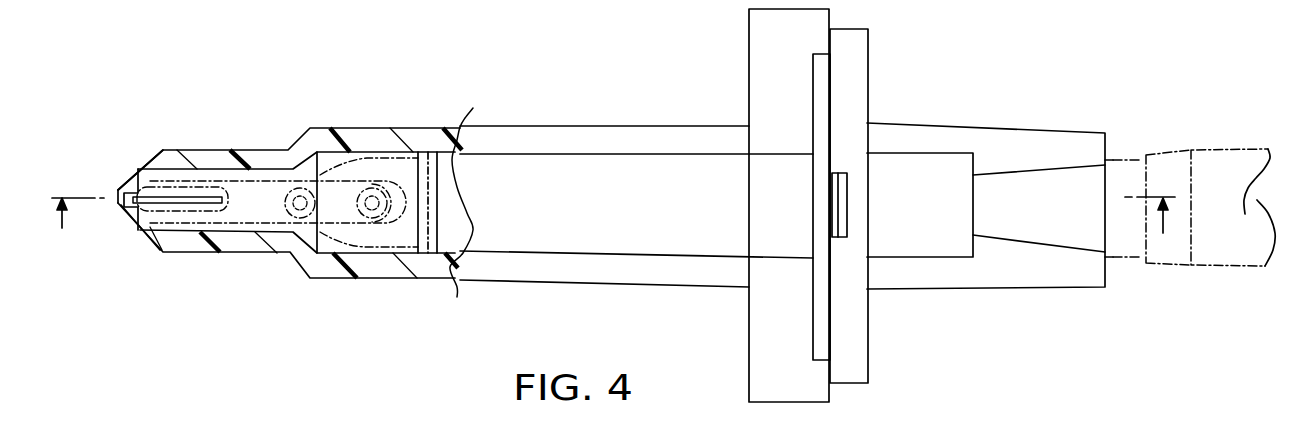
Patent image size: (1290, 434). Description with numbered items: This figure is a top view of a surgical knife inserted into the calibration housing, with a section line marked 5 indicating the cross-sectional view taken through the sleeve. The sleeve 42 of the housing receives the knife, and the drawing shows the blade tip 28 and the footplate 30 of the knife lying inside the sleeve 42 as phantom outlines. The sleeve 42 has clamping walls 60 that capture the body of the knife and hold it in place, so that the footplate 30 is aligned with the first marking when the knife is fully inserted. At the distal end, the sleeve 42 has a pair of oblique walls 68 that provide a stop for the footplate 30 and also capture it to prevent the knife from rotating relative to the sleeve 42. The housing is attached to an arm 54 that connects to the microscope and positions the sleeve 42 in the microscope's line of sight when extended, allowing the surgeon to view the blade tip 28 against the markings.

The blade tip 28 is at (163, 197).
The footplate 30 is at (138, 229).
The sleeve 42 is at (608, 287).
The arm 54 is at (749, 65).
The clamping walls 60 is at (306, 203).
The oblique walls 68 is at (142, 170).
The section line 5- 5 is at (616, 227).